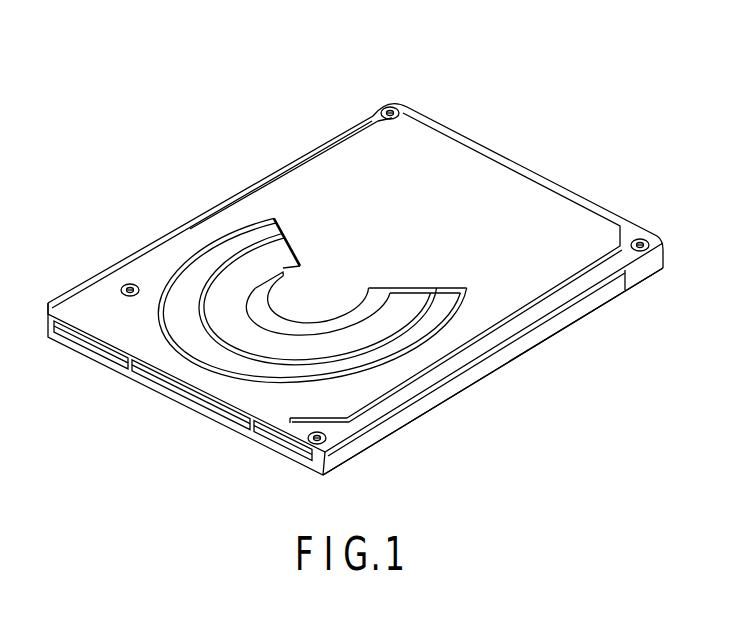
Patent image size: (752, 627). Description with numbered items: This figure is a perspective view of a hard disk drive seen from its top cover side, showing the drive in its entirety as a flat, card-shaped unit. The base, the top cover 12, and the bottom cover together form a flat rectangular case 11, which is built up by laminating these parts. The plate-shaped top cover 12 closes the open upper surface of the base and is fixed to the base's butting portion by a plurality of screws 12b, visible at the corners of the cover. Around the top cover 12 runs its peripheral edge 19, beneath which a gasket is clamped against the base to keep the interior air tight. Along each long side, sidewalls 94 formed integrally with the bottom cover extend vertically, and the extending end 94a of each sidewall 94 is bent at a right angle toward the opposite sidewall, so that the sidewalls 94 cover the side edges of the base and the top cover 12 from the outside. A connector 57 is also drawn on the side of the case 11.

The case 11 is at (291, 149).
The top cover 12 is at (373, 117).
The screws 12b is at (394, 108).
The peripheral edge 19 is at (160, 254).
The connector 57 is at (174, 402).
The sidewalls 94 is at (430, 412).
The extending end 94a is at (512, 334).